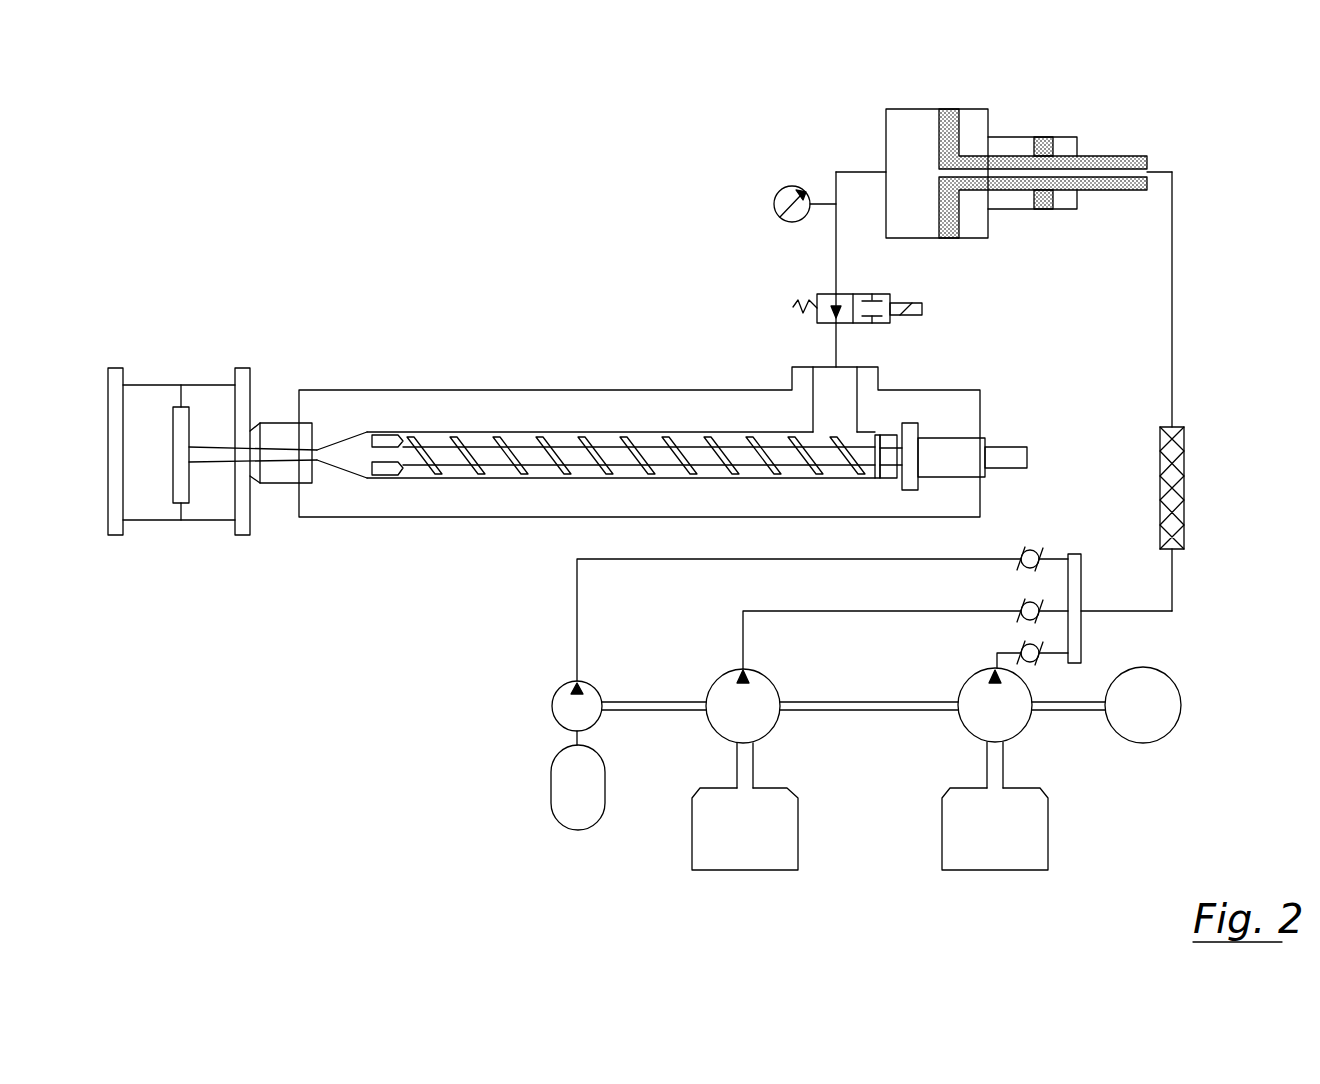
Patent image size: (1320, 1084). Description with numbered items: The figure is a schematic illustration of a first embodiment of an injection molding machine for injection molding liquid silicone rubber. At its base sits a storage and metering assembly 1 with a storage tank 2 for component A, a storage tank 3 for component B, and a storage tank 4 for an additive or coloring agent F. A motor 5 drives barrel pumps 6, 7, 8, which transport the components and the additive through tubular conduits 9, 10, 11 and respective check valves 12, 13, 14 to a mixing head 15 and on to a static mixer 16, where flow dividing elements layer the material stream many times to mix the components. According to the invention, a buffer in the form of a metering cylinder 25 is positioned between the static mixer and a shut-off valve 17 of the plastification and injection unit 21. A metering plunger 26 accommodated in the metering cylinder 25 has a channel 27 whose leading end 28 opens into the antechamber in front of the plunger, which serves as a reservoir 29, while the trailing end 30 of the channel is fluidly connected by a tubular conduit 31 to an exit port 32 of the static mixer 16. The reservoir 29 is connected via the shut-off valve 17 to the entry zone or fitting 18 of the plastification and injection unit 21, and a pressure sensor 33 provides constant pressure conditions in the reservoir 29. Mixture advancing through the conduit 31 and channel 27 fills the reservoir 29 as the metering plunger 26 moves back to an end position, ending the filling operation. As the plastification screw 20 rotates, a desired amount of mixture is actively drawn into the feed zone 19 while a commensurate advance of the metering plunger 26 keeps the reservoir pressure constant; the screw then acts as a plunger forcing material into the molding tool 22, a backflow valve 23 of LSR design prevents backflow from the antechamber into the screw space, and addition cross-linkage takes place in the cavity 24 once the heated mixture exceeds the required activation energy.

The metering assembly 1 is at (1200, 755).
The storage tank 2 is at (752, 856).
The storage tank 3 is at (1008, 855).
The storage tank 4 is at (578, 820).
The motor 5 is at (1140, 722).
The barrel pump 6 is at (983, 730).
The barrel pump 7 is at (730, 720).
The barrel pump 8 is at (567, 712).
The tubular conduit 9 is at (1010, 652).
The tubular conduit 10 is at (765, 613).
The tubular conduit 11 is at (590, 562).
The check valve 12 is at (1036, 661).
The check valve 13 is at (1027, 604).
The check valve 14 is at (1037, 553).
The mixing head 15 is at (1075, 572).
The static mixer 16 is at (1173, 478).
The shut-off valve 17 is at (883, 325).
The fitting 18 is at (823, 367).
The feed zone 19 is at (838, 462).
The plastification screw 20 is at (620, 447).
The plastification and injection unit 21 is at (432, 382).
The molding tool 22 is at (188, 368).
The backflow valve 23 is at (390, 480).
The cavity 24 is at (182, 465).
The metering cylinder 25 is at (1011, 163).
The metering plunger 26 is at (1100, 158).
The channel 27 is at (1020, 173).
The leading end 28 is at (937, 170).
The reservoir 29 is at (902, 162).
The trailing end 30 is at (1148, 170).
The tubular conduit 31 is at (1175, 265).
The exit port 32 is at (1208, 450).
The pressure sensor 33 is at (775, 197).